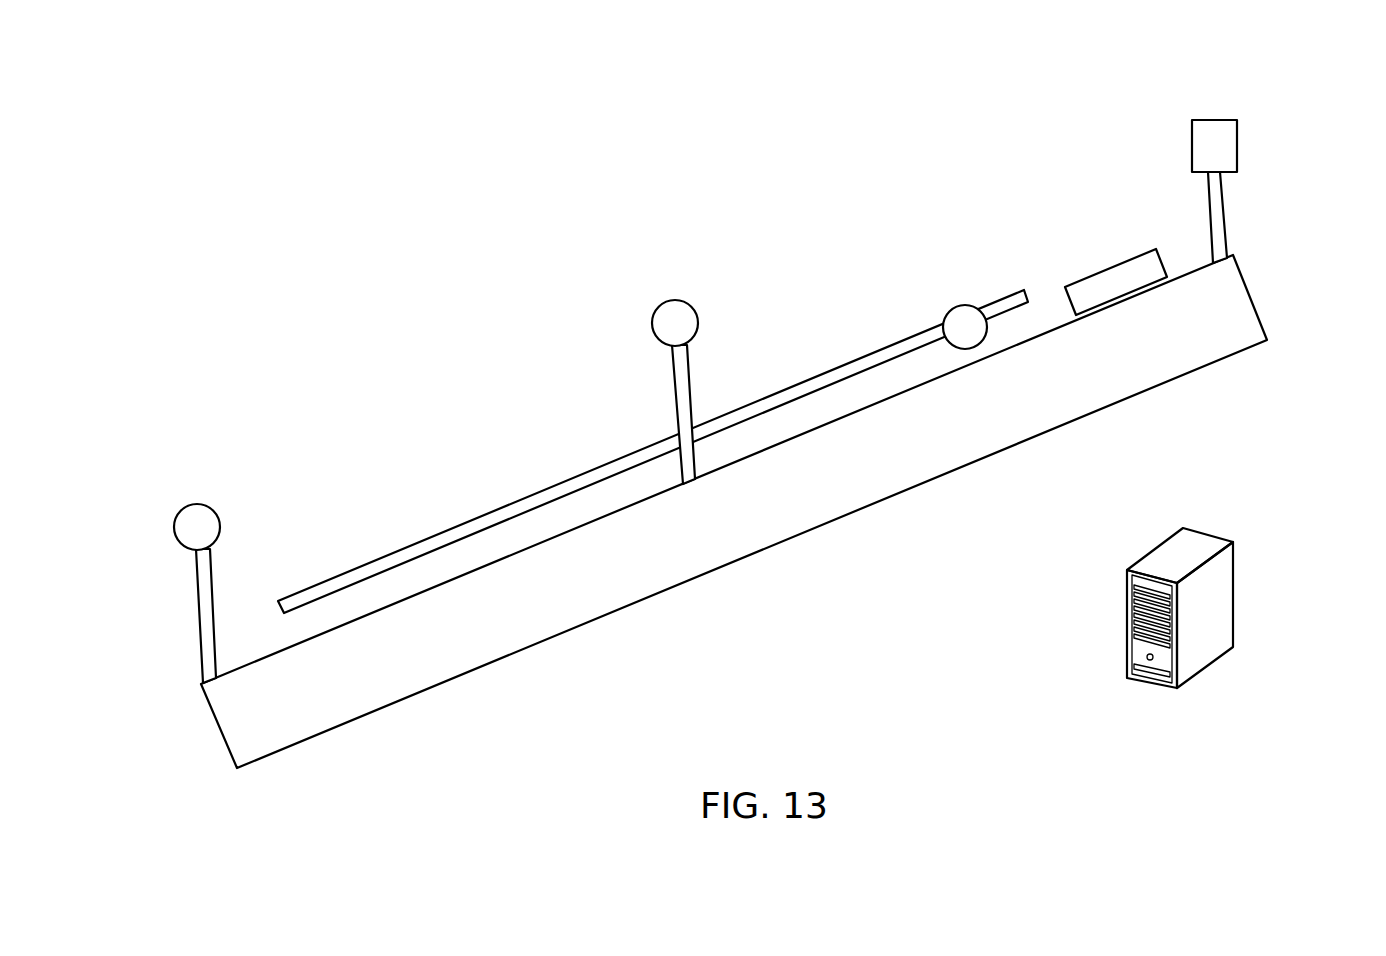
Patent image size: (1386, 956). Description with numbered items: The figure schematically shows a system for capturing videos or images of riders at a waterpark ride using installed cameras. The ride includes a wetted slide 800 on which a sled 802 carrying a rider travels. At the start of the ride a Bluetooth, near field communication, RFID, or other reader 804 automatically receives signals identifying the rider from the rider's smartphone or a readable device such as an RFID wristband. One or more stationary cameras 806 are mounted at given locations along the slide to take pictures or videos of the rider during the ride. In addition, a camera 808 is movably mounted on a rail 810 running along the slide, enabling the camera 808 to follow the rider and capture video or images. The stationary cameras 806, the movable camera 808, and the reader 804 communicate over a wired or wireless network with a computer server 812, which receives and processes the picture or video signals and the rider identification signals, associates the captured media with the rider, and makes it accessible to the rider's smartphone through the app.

The wetted slide 800 is at (1262, 317).
The sled 802 is at (1127, 260).
The reader 804 is at (1215, 120).
The stationary cameras 806 is at (197, 502).
The camera 808 is at (962, 304).
The rail 810 is at (430, 538).
The computer server 812 is at (1203, 532).